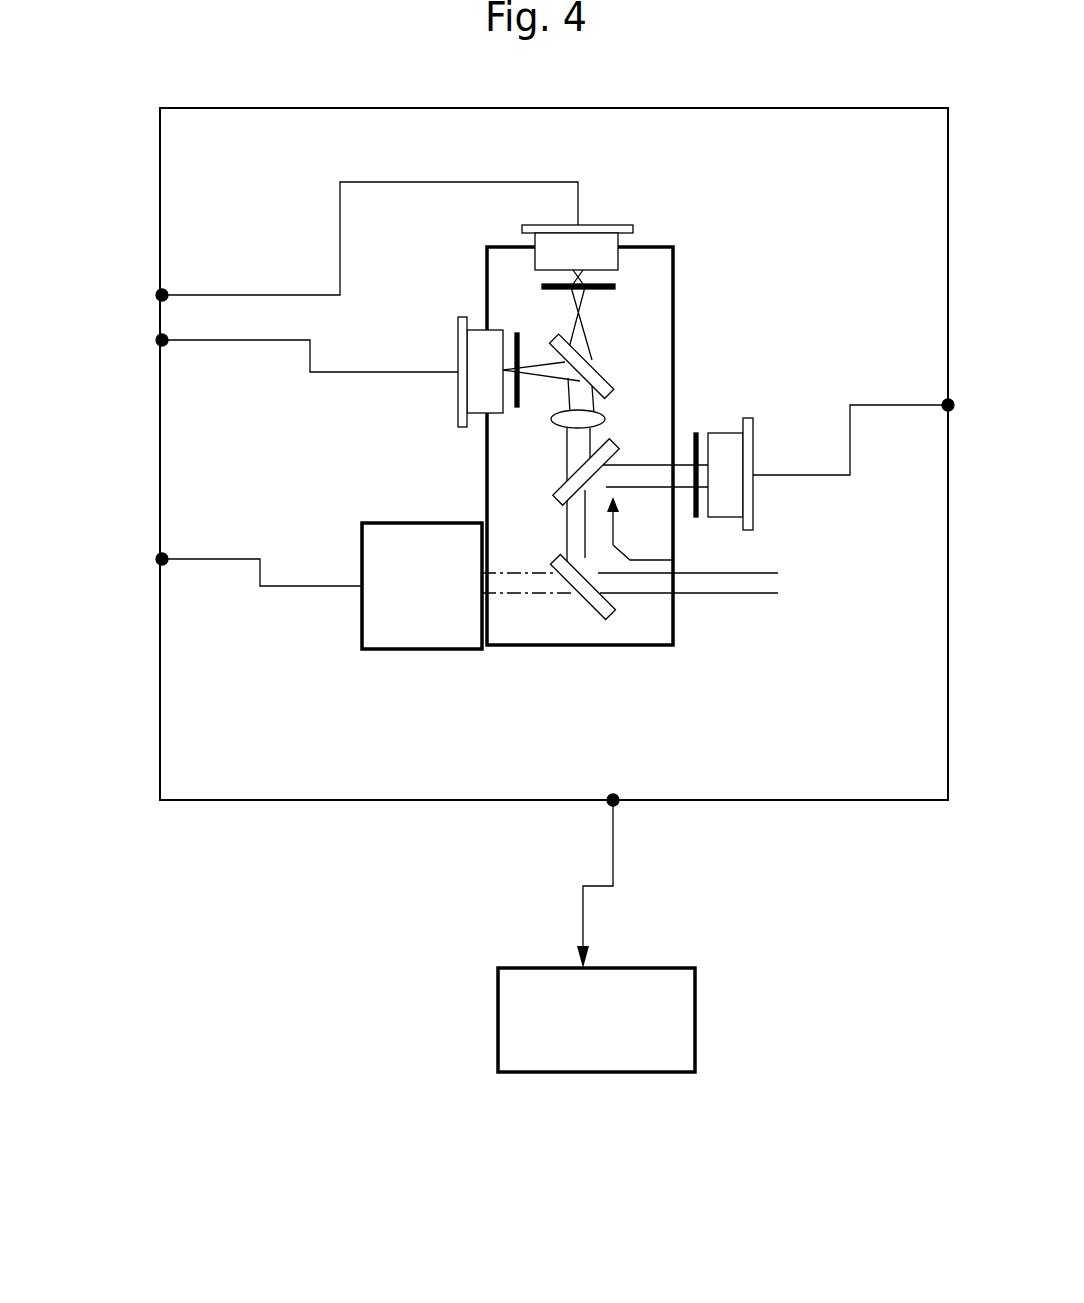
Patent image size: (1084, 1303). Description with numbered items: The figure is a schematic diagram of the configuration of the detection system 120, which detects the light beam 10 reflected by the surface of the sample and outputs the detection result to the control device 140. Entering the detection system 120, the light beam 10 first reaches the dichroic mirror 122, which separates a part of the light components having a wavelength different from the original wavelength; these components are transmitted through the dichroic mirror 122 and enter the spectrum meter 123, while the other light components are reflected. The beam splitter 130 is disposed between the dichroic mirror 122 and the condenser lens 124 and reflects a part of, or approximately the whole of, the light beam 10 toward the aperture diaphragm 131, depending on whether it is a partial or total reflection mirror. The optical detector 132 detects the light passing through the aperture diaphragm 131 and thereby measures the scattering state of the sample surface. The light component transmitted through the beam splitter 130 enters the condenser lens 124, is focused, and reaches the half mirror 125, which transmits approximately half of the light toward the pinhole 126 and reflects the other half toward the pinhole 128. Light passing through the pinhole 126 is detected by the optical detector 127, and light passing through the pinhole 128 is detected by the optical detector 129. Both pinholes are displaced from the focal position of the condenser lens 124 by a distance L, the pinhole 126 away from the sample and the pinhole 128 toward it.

The light beam 10 is at (760, 594).
The detection system 120 is at (160, 168).
The dichroic mirror 122 is at (558, 556).
The spectrum meter 123 is at (424, 646).
The condenser lens 124 is at (598, 418).
The half mirror 125 is at (598, 364).
The pinhole 126 is at (615, 286).
The optical detector 127 is at (522, 230).
The pinhole 128 is at (515, 333).
The optical detector 129 is at (458, 406).
The beam splitter 130 is at (610, 448).
The aperture diaphragm 131 is at (699, 437).
The optical detector 132 is at (755, 508).
The control device 140 is at (518, 968).